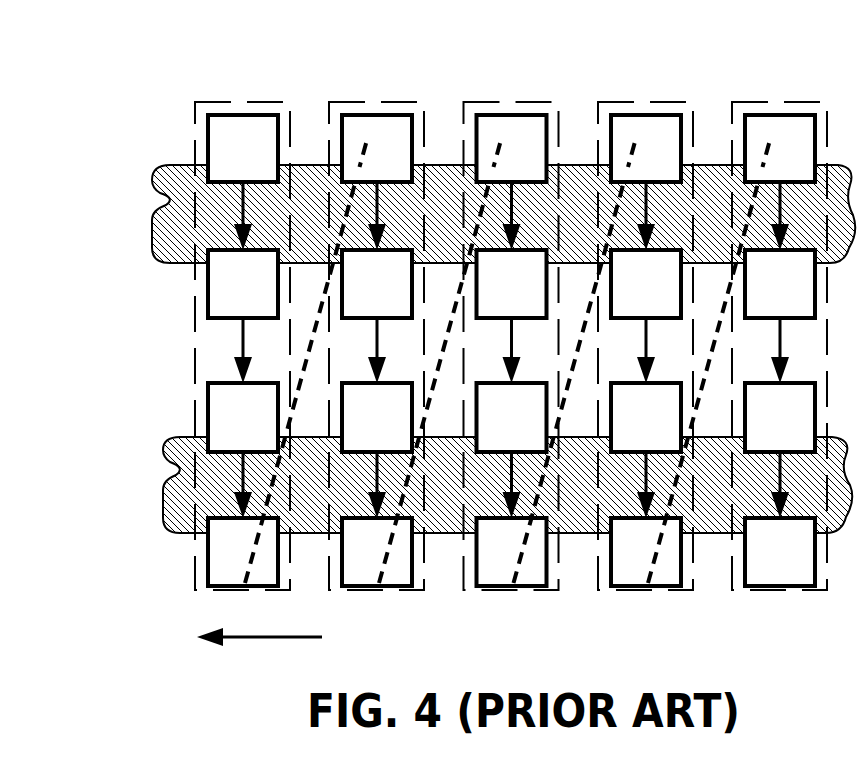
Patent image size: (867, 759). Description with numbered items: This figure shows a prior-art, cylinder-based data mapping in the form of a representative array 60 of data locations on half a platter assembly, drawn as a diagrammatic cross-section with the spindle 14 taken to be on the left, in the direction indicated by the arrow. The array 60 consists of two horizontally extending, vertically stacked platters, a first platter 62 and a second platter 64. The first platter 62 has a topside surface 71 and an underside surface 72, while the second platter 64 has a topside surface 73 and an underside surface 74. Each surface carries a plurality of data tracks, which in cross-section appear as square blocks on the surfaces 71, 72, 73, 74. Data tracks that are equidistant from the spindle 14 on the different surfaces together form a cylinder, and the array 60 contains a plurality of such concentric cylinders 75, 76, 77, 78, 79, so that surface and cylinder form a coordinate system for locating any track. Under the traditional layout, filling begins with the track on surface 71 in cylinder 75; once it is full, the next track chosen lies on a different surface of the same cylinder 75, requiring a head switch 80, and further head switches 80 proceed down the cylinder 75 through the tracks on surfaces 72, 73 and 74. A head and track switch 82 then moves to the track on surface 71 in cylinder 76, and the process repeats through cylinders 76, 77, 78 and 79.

The spindle 14 is at (277, 638).
The array 60 is at (119, 596).
The first platter 62 is at (278, 229).
The second platter 64 is at (307, 501).
The topside surface 71 is at (190, 163).
The underside surface 72 is at (182, 266).
The topside surface 73 is at (187, 437).
The underside surface 74 is at (188, 543).
The cylinder 75 is at (227, 100).
The cylinder 76 is at (419, 308).
The cylinder 77 is at (554, 308).
The cylinder 78 is at (688, 308).
The cylinder 79 is at (779, 308).
The head switch 80 is at (262, 197).
The head and track switch 82 is at (282, 462).